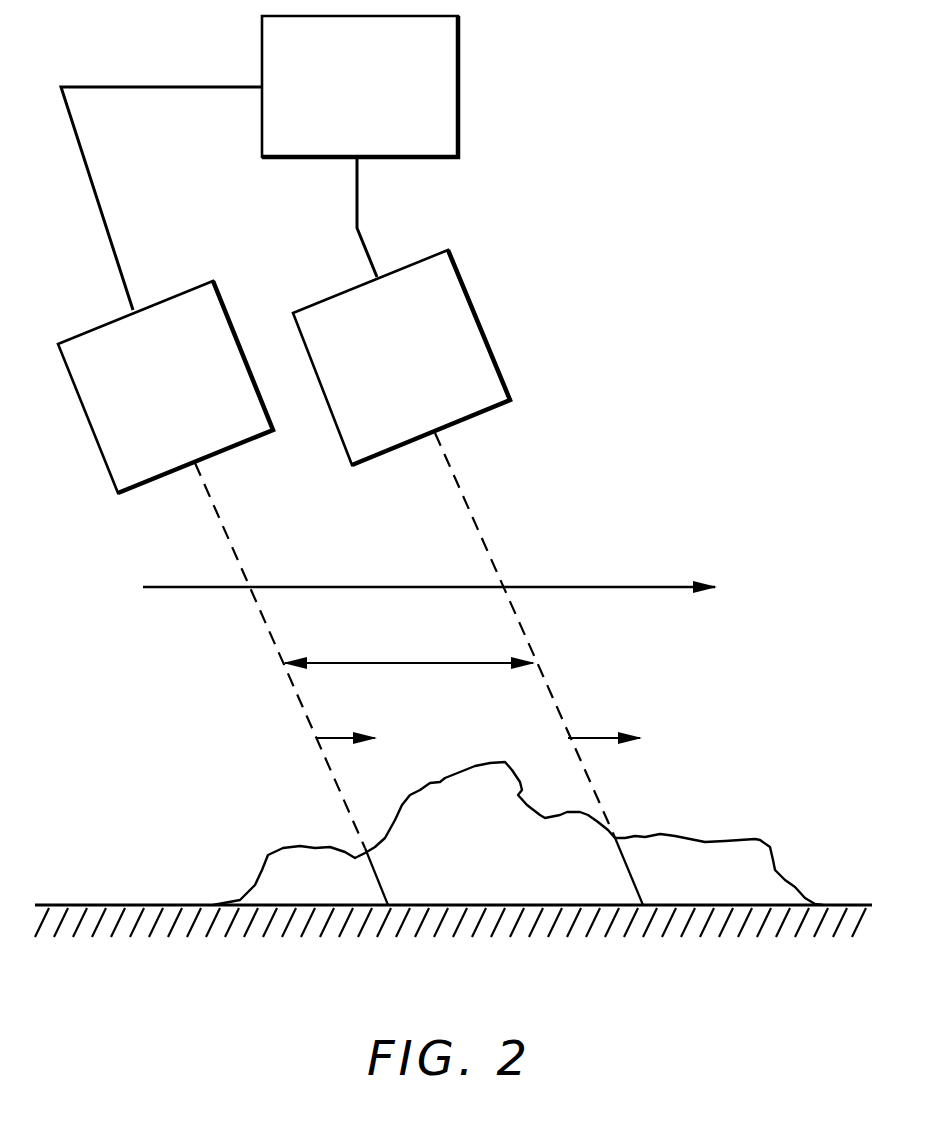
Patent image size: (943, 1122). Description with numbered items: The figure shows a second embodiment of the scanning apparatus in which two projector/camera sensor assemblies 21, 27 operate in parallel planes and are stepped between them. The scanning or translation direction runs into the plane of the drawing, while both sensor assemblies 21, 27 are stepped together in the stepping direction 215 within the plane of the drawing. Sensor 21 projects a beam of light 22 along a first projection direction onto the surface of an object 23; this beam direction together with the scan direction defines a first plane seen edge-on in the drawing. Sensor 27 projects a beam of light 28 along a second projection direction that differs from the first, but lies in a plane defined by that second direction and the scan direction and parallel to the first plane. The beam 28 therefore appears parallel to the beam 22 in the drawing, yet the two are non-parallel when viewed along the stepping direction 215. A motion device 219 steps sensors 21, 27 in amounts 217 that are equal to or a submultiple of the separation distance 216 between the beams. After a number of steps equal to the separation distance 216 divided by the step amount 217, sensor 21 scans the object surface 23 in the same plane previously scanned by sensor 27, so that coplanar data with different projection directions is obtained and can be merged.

The motion device 219 is at (449, 91).
The projector/camera sensor assembly 21 is at (100, 422).
The projector/camera sensor assembly 27 is at (471, 324).
The beam of light 22 is at (218, 518).
The beam of light 28 is at (467, 506).
The stepping direction 215 is at (592, 584).
The separation distance 216 is at (394, 661).
The step amount 217 is at (330, 739).
The object surface 23 is at (755, 838).